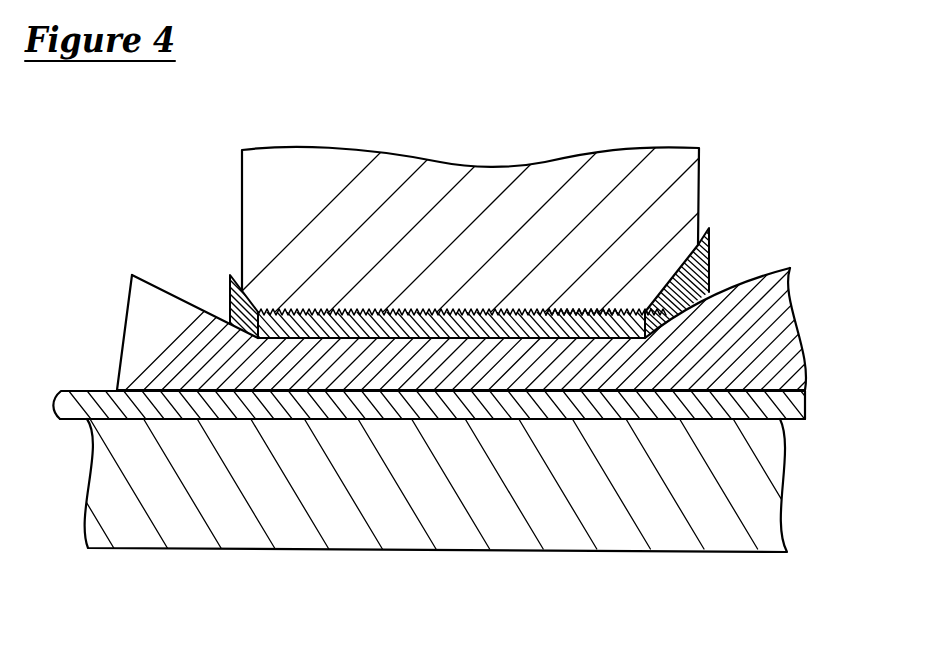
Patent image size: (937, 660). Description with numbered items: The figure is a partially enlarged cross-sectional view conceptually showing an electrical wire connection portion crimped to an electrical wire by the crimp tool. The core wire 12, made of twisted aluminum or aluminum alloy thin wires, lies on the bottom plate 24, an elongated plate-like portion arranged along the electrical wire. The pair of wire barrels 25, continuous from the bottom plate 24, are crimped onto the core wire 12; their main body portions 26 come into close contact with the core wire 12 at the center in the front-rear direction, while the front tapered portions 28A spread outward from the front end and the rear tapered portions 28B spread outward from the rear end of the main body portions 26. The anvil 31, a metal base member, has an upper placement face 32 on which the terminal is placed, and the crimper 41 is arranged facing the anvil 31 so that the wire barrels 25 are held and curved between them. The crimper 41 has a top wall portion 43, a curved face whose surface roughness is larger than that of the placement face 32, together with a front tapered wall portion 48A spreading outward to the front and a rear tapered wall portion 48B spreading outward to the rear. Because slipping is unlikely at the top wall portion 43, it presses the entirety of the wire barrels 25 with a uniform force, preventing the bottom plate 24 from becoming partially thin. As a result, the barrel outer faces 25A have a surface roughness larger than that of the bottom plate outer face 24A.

The core wire 12 is at (477, 405).
The bottom plate 24 is at (88, 400).
The bottom plate outer face 24A is at (563, 419).
The wire barrels 25 is at (462, 208).
The main body portions 26 is at (460, 313).
The barrel outer faces 25A is at (577, 311).
The front tapered portions 28A is at (258, 338).
The rear tapered portions 28B is at (705, 278).
The anvil 31 is at (190, 537).
The placement face 32 is at (722, 417).
The crimper 41 is at (688, 173).
The top wall portion 43 is at (348, 316).
The front tapered wall portion 48A is at (248, 308).
The rear tapered wall portion 48B is at (703, 268).